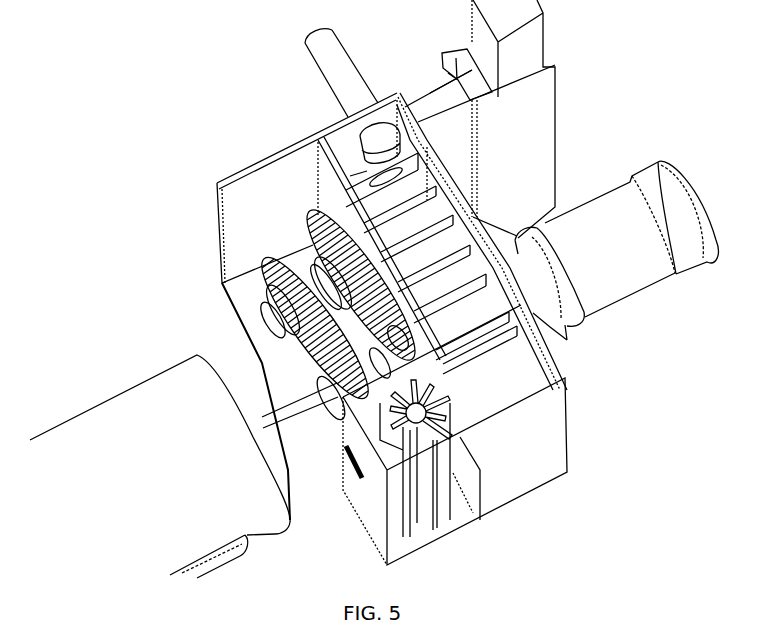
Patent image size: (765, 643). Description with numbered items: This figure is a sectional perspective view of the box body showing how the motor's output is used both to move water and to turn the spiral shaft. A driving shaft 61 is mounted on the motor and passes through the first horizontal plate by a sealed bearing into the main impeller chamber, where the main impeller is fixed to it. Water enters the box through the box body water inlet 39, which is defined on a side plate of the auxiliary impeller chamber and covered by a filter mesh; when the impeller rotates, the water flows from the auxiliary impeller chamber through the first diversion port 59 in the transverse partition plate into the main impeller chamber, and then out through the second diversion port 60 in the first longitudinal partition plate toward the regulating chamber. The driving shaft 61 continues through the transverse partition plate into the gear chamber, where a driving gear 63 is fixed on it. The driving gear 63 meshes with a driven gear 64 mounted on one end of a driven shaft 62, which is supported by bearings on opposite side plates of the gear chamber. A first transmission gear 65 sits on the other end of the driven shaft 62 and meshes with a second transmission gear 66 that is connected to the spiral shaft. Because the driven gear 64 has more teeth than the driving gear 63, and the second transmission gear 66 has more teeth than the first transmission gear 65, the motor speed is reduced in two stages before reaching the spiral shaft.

The box body water inlet 39 is at (358, 485).
The first diversion port 59 is at (470, 425).
The second diversion port 60 is at (410, 165).
The driving shaft 61 is at (385, 372).
The driven shaft 62 is at (266, 318).
The driving gear 63 is at (405, 340).
The driven gear 64 is at (318, 245).
The first transmission gear 65 is at (300, 245).
The second transmission gear 66 is at (325, 377).